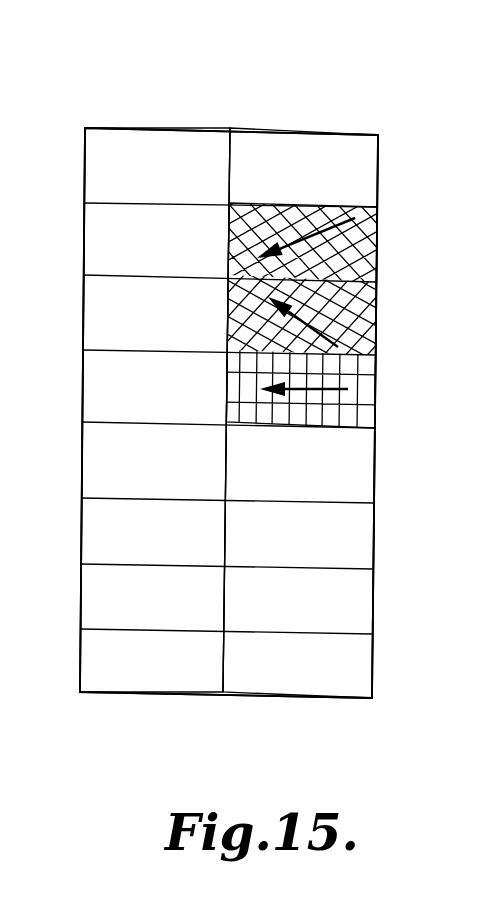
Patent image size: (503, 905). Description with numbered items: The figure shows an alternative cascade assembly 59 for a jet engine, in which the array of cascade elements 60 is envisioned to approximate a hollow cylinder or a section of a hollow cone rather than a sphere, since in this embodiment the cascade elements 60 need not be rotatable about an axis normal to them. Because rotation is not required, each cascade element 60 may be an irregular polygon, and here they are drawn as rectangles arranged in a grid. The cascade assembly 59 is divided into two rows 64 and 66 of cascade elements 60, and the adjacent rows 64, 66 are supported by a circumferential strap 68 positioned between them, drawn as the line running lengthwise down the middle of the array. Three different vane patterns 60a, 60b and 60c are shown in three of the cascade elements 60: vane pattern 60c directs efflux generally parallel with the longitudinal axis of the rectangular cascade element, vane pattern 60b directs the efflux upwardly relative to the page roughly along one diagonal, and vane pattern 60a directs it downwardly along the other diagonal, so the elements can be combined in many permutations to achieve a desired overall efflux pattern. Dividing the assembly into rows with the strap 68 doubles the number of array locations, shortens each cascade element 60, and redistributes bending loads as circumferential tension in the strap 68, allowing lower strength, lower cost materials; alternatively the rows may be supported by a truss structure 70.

The alternative cascade assembly 59 is at (96, 78).
The truss structure 70 is at (85, 160).
The circumferential strap 68 is at (232, 165).
The first row of cascade elements 64 is at (143, 713).
The second row of cascade elements 66 is at (296, 717).
The cascade element 60 is at (345, 205).
The first vane pattern 60a is at (378, 253).
The second vane pattern 60b is at (372, 352).
The third vane pattern 60c is at (370, 418).